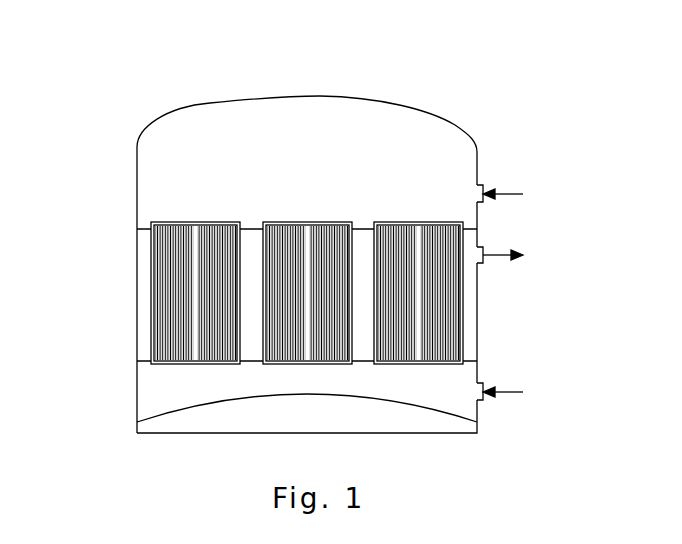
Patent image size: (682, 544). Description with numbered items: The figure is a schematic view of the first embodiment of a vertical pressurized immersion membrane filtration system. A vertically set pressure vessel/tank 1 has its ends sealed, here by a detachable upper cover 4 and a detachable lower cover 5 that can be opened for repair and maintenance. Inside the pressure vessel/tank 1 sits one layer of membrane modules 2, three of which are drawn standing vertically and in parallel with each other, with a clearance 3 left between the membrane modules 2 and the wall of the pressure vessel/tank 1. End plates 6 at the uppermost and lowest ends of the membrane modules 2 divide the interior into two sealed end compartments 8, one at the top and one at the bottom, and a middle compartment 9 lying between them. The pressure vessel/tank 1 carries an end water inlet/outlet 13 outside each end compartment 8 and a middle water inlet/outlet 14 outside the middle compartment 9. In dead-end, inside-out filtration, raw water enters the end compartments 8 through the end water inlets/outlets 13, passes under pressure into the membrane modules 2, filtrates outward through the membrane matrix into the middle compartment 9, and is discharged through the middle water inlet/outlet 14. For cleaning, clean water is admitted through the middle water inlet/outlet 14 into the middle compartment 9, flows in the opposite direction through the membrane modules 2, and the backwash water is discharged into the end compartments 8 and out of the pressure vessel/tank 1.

The pressure vessel/tank 1 is at (137, 193).
The membrane module 2 is at (148, 229).
The clearance 3 is at (147, 295).
The upper cover 4 is at (308, 96).
The lower cover 5 is at (308, 434).
The end plate 6 is at (190, 282).
The end compartment 8 is at (365, 148).
The middle compartment 9 is at (472, 328).
The end water inlet/outlet 13 is at (484, 186).
The middle water inlet/outlet 14 is at (484, 247).